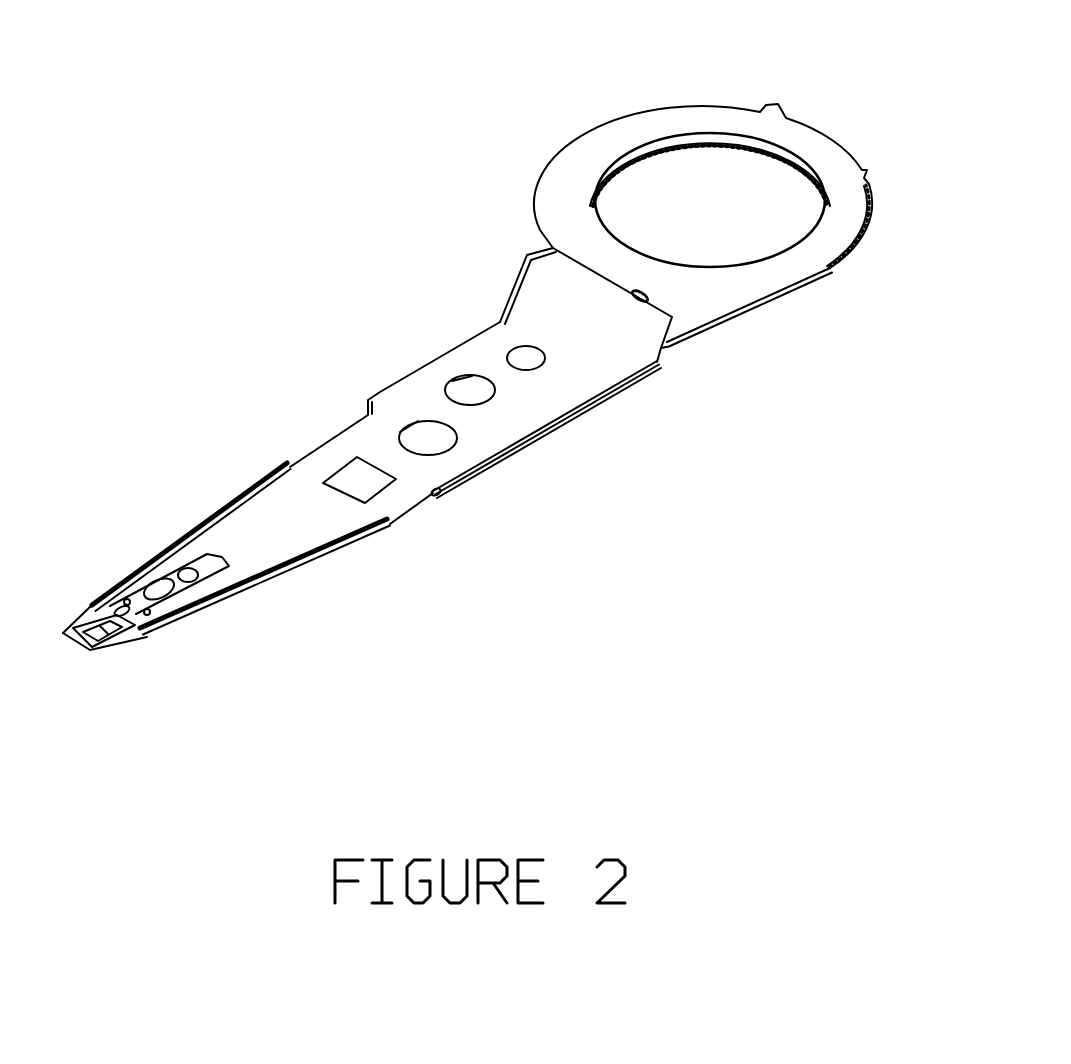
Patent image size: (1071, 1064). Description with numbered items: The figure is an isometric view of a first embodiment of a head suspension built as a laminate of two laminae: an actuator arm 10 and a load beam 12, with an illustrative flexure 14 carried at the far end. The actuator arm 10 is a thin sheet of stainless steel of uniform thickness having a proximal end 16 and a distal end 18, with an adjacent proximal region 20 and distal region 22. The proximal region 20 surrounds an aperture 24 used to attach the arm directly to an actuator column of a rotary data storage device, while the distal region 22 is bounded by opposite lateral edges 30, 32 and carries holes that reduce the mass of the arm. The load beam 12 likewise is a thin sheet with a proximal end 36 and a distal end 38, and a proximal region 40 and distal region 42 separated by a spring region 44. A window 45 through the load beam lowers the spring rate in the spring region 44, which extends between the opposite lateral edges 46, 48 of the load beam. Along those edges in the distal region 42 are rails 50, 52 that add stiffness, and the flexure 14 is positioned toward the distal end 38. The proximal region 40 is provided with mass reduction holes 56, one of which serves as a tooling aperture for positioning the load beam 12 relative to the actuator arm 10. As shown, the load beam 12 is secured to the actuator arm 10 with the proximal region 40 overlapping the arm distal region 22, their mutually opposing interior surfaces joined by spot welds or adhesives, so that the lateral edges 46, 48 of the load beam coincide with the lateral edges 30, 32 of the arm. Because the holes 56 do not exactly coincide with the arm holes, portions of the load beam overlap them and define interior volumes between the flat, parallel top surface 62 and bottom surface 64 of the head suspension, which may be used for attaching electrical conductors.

The actuator arm 10 is at (668, 127).
The load beam 12 is at (284, 508).
The flexure 14 is at (173, 578).
The proximal end 16 is at (823, 131).
The distal end 18 is at (436, 495).
The proximal region 20 is at (824, 292).
The distal region 22 is at (574, 430).
The aperture 24 is at (774, 166).
The lateral edge 30 is at (516, 280).
The lateral edge 32 is at (613, 392).
The proximal end 36 is at (575, 255).
The distal end 38 is at (140, 632).
The proximal region 40 is at (547, 271).
The distal region 42 is at (230, 523).
The spring region 44 is at (330, 463).
The window 45 is at (345, 493).
The lateral edge 46 is at (380, 392).
The lateral edge 48 is at (513, 447).
The rail 50 is at (100, 603).
The rail 52 is at (268, 577).
The mass reduction holes 56 is at (521, 336).
The top surface 62 is at (618, 341).
The bottom surface 64 is at (729, 316).